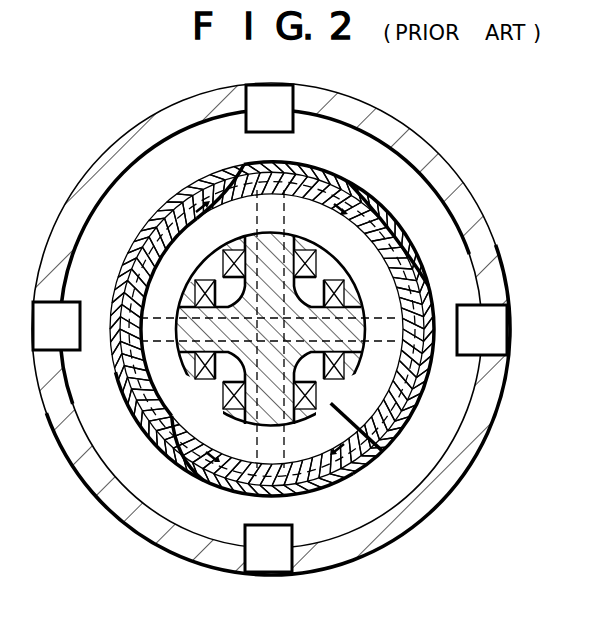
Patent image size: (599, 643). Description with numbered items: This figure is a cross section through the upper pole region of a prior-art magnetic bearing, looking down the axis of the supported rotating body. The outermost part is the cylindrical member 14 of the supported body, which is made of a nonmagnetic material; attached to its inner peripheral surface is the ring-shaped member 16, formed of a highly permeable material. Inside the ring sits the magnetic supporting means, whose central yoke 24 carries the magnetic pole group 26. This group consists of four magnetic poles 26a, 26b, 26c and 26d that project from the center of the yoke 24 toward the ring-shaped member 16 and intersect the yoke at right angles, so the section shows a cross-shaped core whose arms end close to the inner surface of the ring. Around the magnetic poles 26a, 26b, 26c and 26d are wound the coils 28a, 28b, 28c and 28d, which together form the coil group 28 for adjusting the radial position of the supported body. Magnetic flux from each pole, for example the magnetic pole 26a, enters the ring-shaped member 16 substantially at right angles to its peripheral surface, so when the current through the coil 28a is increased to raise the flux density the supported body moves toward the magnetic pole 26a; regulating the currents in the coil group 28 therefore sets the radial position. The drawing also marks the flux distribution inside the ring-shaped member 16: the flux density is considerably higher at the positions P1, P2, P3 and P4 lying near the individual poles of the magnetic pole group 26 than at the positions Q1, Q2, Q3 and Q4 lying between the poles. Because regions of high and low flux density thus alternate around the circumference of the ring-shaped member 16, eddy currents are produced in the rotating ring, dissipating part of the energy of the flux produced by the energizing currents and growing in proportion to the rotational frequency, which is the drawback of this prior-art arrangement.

The cylindrical member 14 is at (462, 302).
The ring-shaped member 16 is at (455, 245).
The yoke 24 is at (252, 470).
The magnetic pole group 26 is at (181, 296).
The magnetic pole 26a is at (150, 386).
The magnetic pole 26b is at (336, 470).
The magnetic pole 26c is at (398, 286).
The magnetic pole 26d is at (318, 195).
The coil group 28 is at (190, 374).
The coil 28a is at (232, 395).
The coil 28b is at (372, 440).
The coil 28c is at (390, 246).
The coil 28d is at (232, 248).
The position near magnetic pole P1 is at (158, 350).
The position near magnetic pole P2 is at (284, 482).
The position near magnetic pole P3 is at (420, 356).
The position near magnetic pole P4 is at (287, 182).
The position between magnetic poles Q1 is at (185, 442).
The position between magnetic poles Q2 is at (398, 360).
The position between magnetic poles Q3 is at (362, 240).
The position between magnetic poles Q4 is at (200, 228).